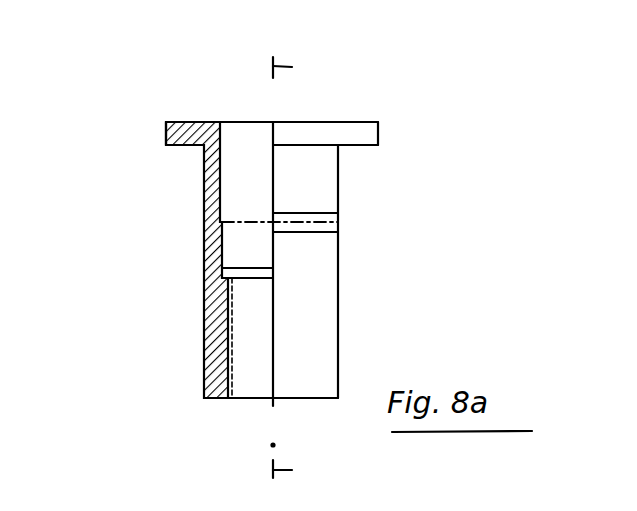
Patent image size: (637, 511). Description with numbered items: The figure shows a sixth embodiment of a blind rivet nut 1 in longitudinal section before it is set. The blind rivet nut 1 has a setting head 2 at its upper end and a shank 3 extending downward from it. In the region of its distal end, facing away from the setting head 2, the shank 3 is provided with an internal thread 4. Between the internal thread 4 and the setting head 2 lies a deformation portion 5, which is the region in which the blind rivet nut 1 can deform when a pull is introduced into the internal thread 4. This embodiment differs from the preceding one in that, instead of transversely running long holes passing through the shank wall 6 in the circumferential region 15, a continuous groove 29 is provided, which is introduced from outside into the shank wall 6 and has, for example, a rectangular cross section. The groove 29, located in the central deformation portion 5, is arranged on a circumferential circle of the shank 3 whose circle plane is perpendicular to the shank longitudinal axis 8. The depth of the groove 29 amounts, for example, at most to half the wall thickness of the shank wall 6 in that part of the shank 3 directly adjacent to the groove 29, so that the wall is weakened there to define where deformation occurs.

The blind rivet nut 1 is at (158, 344).
The setting head 2 is at (182, 126).
The shank 3 is at (330, 192).
The internal thread 4 is at (233, 372).
The deformation portion 5 is at (142, 145).
The shank wall 6 is at (204, 187).
The shank longitudinal axis 8 is at (297, 266).
The circumferential region 15 is at (355, 213).
The groove 29 is at (206, 224).